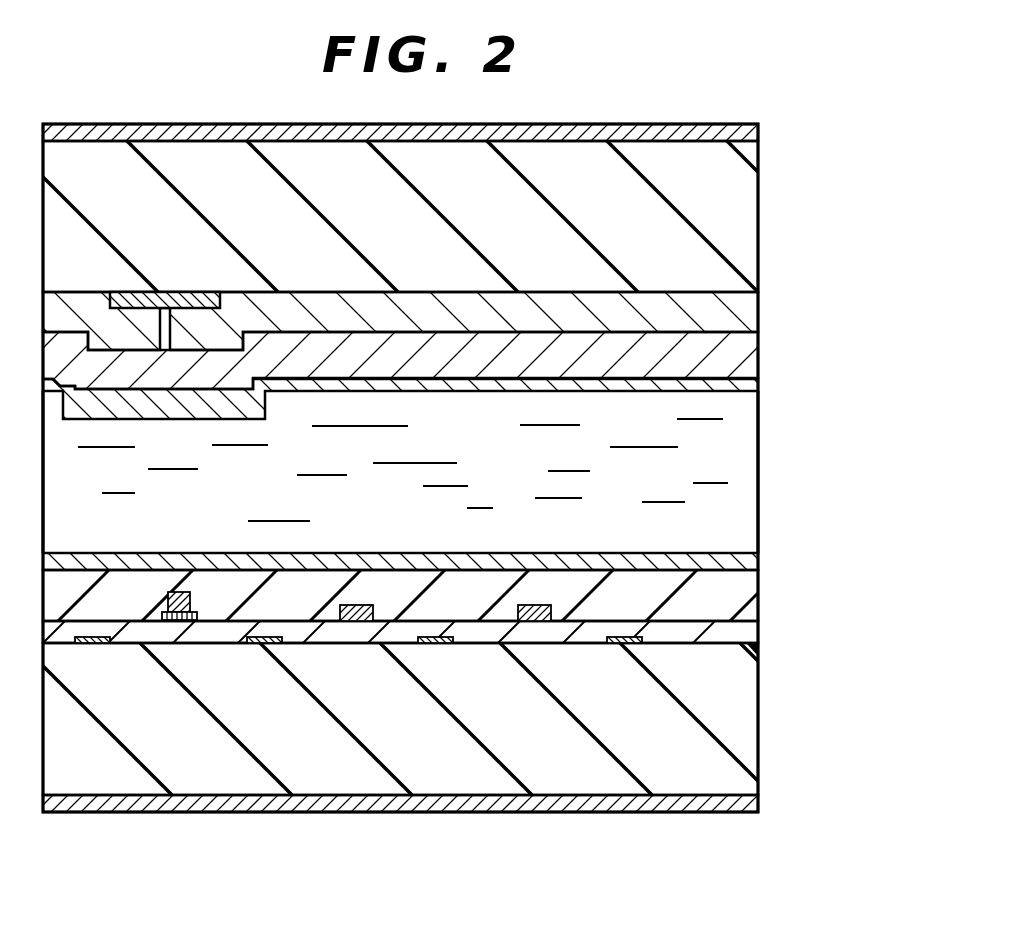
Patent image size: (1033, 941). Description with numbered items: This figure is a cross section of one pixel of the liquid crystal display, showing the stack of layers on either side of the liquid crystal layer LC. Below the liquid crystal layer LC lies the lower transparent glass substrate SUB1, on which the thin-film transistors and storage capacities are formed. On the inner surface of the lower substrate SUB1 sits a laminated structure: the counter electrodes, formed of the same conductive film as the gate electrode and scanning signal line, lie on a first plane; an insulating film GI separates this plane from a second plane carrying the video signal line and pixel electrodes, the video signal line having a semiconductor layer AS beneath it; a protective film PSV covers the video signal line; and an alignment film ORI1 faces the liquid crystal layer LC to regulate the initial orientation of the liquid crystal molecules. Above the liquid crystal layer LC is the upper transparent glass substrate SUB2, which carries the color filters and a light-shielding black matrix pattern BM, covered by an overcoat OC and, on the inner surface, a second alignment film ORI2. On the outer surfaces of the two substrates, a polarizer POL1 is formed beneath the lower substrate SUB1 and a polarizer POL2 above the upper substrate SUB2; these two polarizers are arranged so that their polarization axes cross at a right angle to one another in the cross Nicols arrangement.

The polarizer POL2 is at (758, 133).
The upper transparent glass substrate SUB2 is at (750, 228).
The black matrix pattern BM is at (175, 292).
The overcoat film OC is at (745, 352).
The alignment film ORI2 is at (747, 387).
The liquid crystal layer LC is at (747, 445).
The alignment film ORI1 is at (745, 565).
The protective film PSV is at (745, 600).
The insulating film GI is at (748, 630).
The semiconductor layer AS is at (197, 614).
The lower transparent glass substrate SUB1 is at (741, 712).
The polarizer POL1 is at (757, 807).